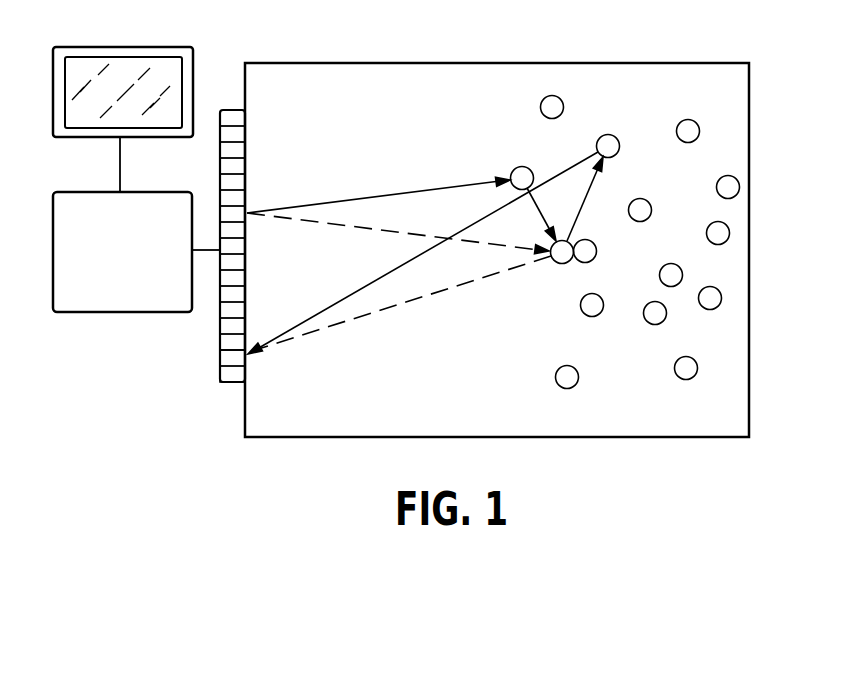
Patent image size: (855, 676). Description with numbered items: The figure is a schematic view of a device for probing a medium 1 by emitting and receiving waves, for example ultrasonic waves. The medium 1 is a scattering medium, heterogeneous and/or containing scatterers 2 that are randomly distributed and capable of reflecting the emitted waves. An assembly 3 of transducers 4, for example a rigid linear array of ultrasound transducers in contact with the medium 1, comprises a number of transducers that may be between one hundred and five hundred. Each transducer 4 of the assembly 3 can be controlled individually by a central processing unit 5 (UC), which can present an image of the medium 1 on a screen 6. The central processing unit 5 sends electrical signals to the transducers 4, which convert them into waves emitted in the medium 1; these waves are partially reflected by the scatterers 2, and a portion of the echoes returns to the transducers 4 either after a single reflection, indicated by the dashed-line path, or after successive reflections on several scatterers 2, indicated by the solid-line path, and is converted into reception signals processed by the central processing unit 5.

The medium 1 is at (735, 98).
The scatterers 2 is at (720, 231).
The assembly of transducers 3 is at (226, 95).
The transducers 4 is at (225, 357).
The central processing unit 5 is at (140, 296).
The screen 6 is at (148, 47).